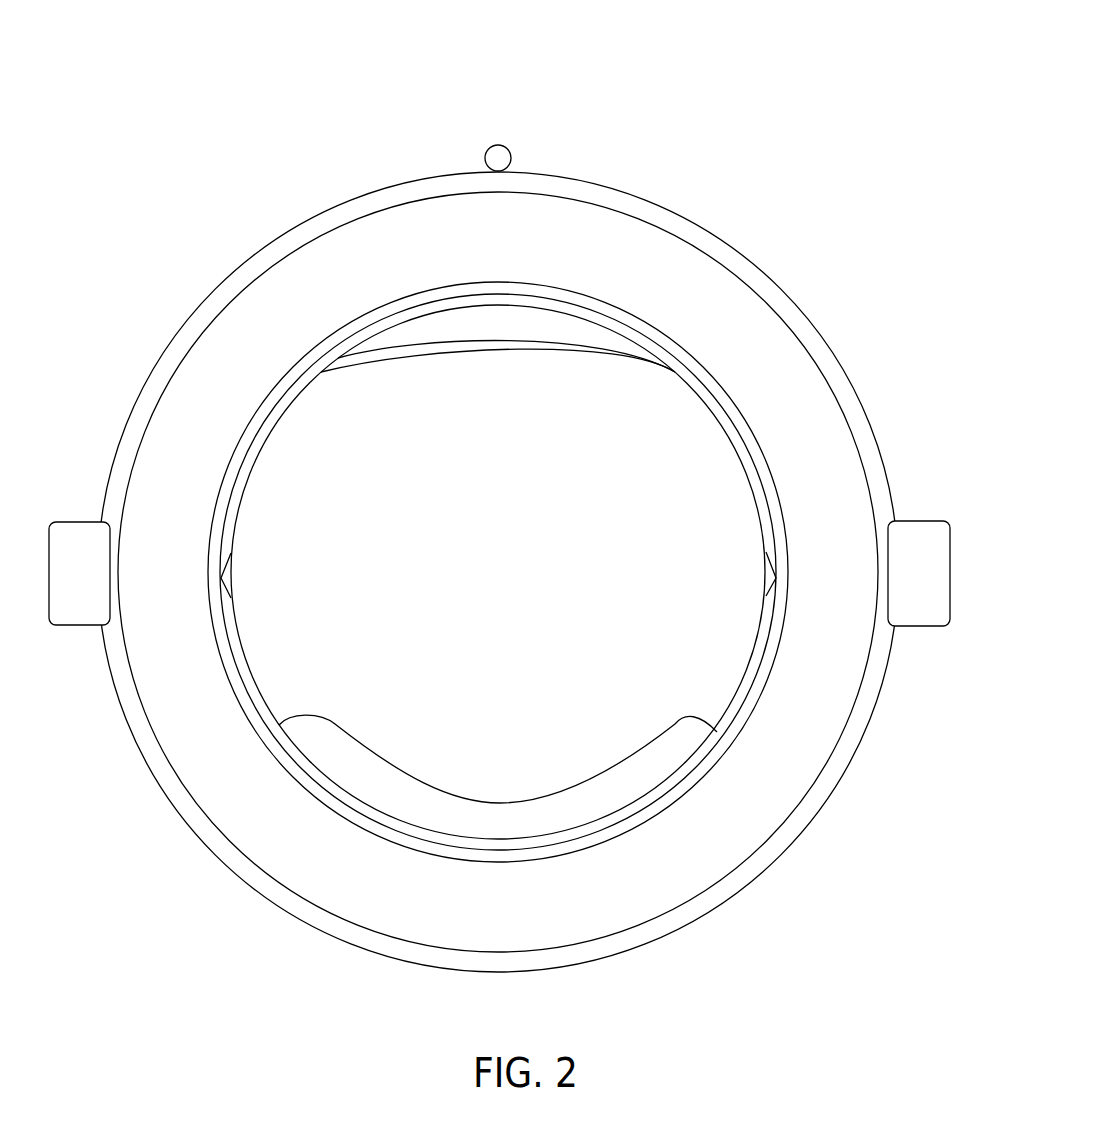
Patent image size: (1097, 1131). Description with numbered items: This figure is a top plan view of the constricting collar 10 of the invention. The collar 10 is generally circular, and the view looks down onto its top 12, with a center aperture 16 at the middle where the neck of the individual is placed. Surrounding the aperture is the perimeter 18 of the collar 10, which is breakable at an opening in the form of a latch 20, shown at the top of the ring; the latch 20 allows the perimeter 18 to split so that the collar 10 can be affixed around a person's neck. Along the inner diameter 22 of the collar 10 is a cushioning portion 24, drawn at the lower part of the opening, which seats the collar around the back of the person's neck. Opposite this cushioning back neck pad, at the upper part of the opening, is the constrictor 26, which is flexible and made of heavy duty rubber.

The collar 10 is at (499, 486).
The top 12 is at (775, 340).
The center aperture 16 is at (512, 574).
The perimeter 18 is at (873, 722).
The latch 20 is at (509, 150).
The inner diameter 22 is at (758, 640).
The cushioning portion 24 is at (428, 813).
The constrictor 26 is at (562, 348).